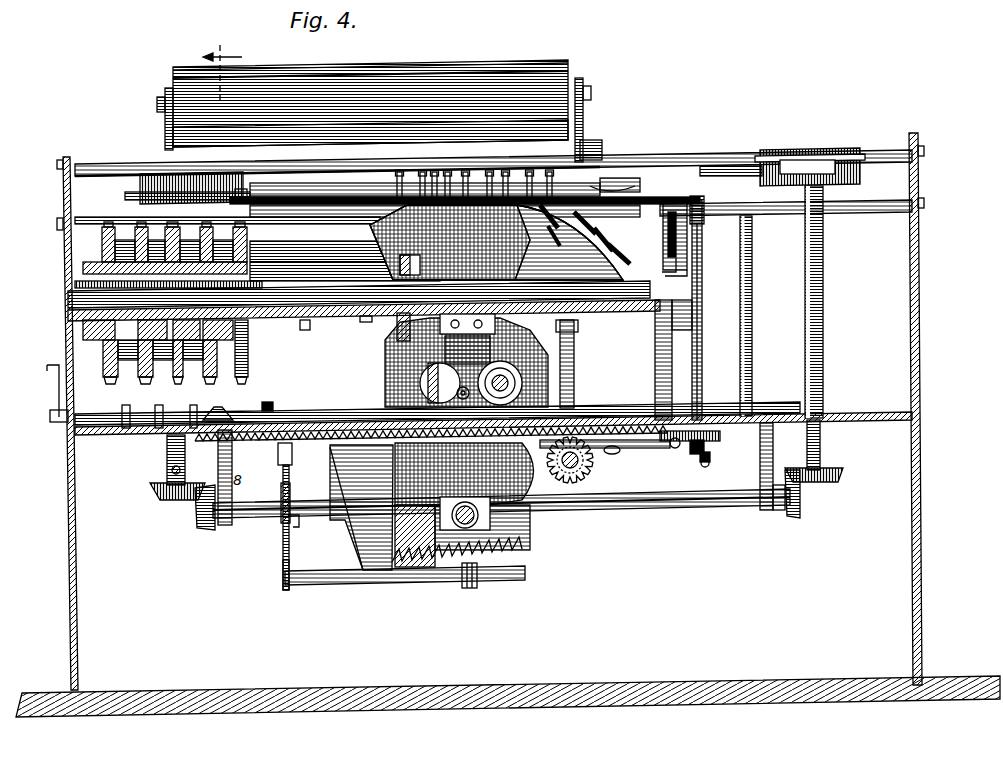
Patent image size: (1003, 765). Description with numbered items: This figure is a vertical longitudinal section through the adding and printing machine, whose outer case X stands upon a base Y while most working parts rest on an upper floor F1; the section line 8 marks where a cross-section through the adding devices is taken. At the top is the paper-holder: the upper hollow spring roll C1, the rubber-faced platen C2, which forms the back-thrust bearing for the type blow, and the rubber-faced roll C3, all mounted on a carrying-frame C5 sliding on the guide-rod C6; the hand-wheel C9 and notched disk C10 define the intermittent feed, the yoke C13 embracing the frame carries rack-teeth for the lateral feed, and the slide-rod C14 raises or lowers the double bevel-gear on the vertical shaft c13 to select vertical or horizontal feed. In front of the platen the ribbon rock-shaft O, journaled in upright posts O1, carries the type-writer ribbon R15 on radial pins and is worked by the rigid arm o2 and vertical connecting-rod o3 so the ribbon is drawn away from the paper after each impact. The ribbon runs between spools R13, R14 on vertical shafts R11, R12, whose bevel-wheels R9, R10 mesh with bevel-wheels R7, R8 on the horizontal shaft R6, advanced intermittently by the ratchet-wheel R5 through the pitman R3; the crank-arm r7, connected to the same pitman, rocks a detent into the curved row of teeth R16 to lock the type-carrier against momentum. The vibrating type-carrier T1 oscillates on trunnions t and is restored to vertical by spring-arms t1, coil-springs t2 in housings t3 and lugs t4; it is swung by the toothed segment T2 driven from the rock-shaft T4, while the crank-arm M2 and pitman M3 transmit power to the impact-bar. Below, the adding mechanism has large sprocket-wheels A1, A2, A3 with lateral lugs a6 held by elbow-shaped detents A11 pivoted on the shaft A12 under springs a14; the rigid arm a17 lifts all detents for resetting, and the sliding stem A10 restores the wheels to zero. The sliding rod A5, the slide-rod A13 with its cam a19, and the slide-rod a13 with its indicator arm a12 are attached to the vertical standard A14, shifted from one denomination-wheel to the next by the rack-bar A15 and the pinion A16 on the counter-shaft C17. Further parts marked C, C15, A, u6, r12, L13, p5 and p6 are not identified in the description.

The section line 8 is at (222, 67).
The platen carriage C is at (551, 101).
The upper hollow roll C1 is at (596, 136).
The rubber-faced platen C2 is at (493, 160).
The rubber-faced roll C3 is at (602, 150).
The carrying-frame C5 is at (594, 112).
The guide-rod C6 is at (620, 177).
The hand-wheel C9 is at (688, 243).
The notched disk C10 is at (593, 229).
The yoke C13 is at (690, 264).
The slide-rod C14 is at (678, 425).
The link C15 is at (626, 449).
The counter-shaft C17 is at (561, 465).
The rock-shaft O is at (697, 200).
The upright post O1 is at (423, 172).
The rigid arm o2 is at (698, 208).
The vertical connecting-rod o3 is at (702, 297).
The laterally-projecting lug a6 is at (157, 226).
The arm a12 is at (140, 172).
The slide-rod a13 is at (326, 198).
The spring a14 is at (184, 253).
The rigid arm a17 is at (55, 392).
The cam a19 is at (218, 404).
The main rail A is at (343, 301).
The sprocket-wheel A1 is at (240, 360).
The sprocket-wheel A2 is at (218, 370).
The sprocket-wheel A3 is at (186, 372).
The longitudinally-sliding rod A5 is at (372, 316).
The longitudinally-sliding stem A10 is at (314, 328).
The elbow-shaped detent A11 is at (126, 405).
The shaft A12 is at (125, 432).
The slide-rod A13 is at (318, 430).
The vertical standard A14 is at (690, 330).
The sliding rack-bar A15 is at (660, 440).
The pinion A16 is at (605, 460).
The block u6 is at (122, 372).
The pitman R3 is at (290, 492).
The ratchet-wheel R5 is at (292, 455).
The horizontal shaft R6 is at (501, 503).
The bevel-wheel R7 is at (795, 516).
The bevel-wheel R8 is at (210, 530).
The bevel-wheel R9 is at (843, 475).
The bevel-wheel R10 is at (172, 500).
The vertical shaft R11 is at (823, 332).
The vertical shaft R12 is at (160, 456).
The spool R13 is at (810, 167).
The spool R14 is at (191, 188).
The type-writer ribbon R15 is at (726, 166).
The curved row of teeth R16 is at (480, 520).
The crank-arm r7 is at (283, 548).
The fork r12 is at (300, 524).
The vibrating type-carrier T1 is at (590, 238).
The toothed segment T2 is at (350, 530).
The rock-shaft T4 is at (480, 560).
The trunnion t is at (461, 383).
The spring-arm t1 is at (525, 340).
The coil-spring t2 is at (522, 384).
The housing t3 is at (418, 386).
The lug t4 is at (467, 350).
The vertical shaft c13 is at (574, 368).
The cam disc L13 is at (464, 505).
The crank-arm M2 is at (696, 455).
The pitman M3 is at (716, 464).
The pin p5 is at (474, 588).
The bar p6 is at (344, 585).
The upper floor F1 is at (865, 416).
The outer case X is at (922, 415).
The base Y is at (406, 685).